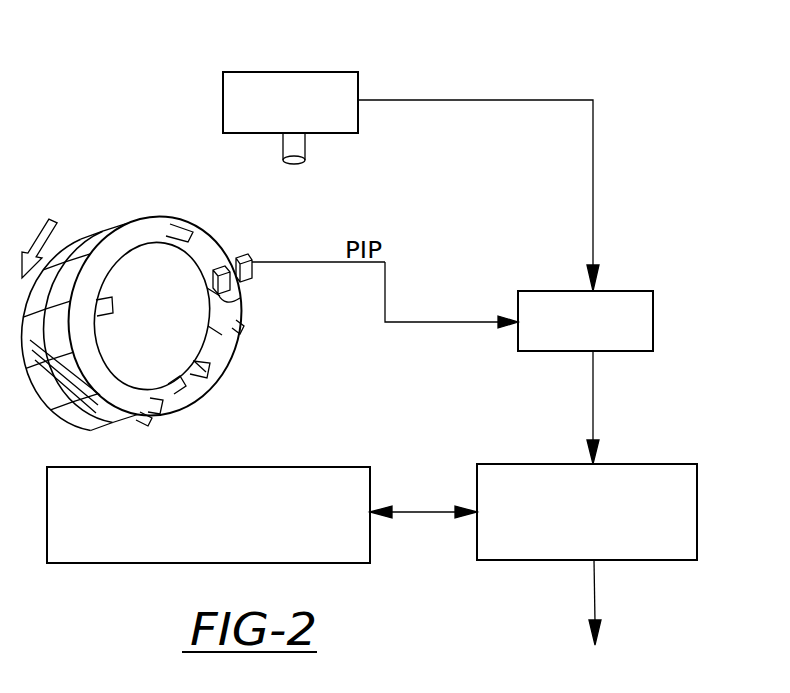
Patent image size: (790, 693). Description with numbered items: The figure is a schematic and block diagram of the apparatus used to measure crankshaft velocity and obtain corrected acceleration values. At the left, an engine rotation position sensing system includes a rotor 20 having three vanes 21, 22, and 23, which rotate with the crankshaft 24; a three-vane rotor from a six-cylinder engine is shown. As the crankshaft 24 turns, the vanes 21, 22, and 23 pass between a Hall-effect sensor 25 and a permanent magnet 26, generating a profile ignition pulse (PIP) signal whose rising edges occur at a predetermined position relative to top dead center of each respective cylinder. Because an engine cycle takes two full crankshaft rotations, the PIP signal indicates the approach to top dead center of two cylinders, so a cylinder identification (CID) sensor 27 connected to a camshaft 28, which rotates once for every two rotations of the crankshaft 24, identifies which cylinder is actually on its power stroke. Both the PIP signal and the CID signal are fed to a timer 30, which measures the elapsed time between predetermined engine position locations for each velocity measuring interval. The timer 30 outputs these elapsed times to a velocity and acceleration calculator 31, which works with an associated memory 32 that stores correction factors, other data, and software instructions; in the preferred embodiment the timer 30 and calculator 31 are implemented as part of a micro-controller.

The rotor 20 is at (152, 234).
The vane 21 is at (170, 386).
The vane 22 is at (243, 324).
The vane 23 is at (148, 420).
The crankshaft 24 is at (108, 216).
The Hall-effect sensor 25 is at (246, 257).
The permanent magnet 26 is at (238, 297).
The cylinder identification (CID) sensor 27 is at (360, 82).
The camshaft 28 is at (306, 146).
The timer 30 is at (637, 290).
The velocity and acceleration calculator 31 is at (645, 463).
The memory 32 is at (314, 467).